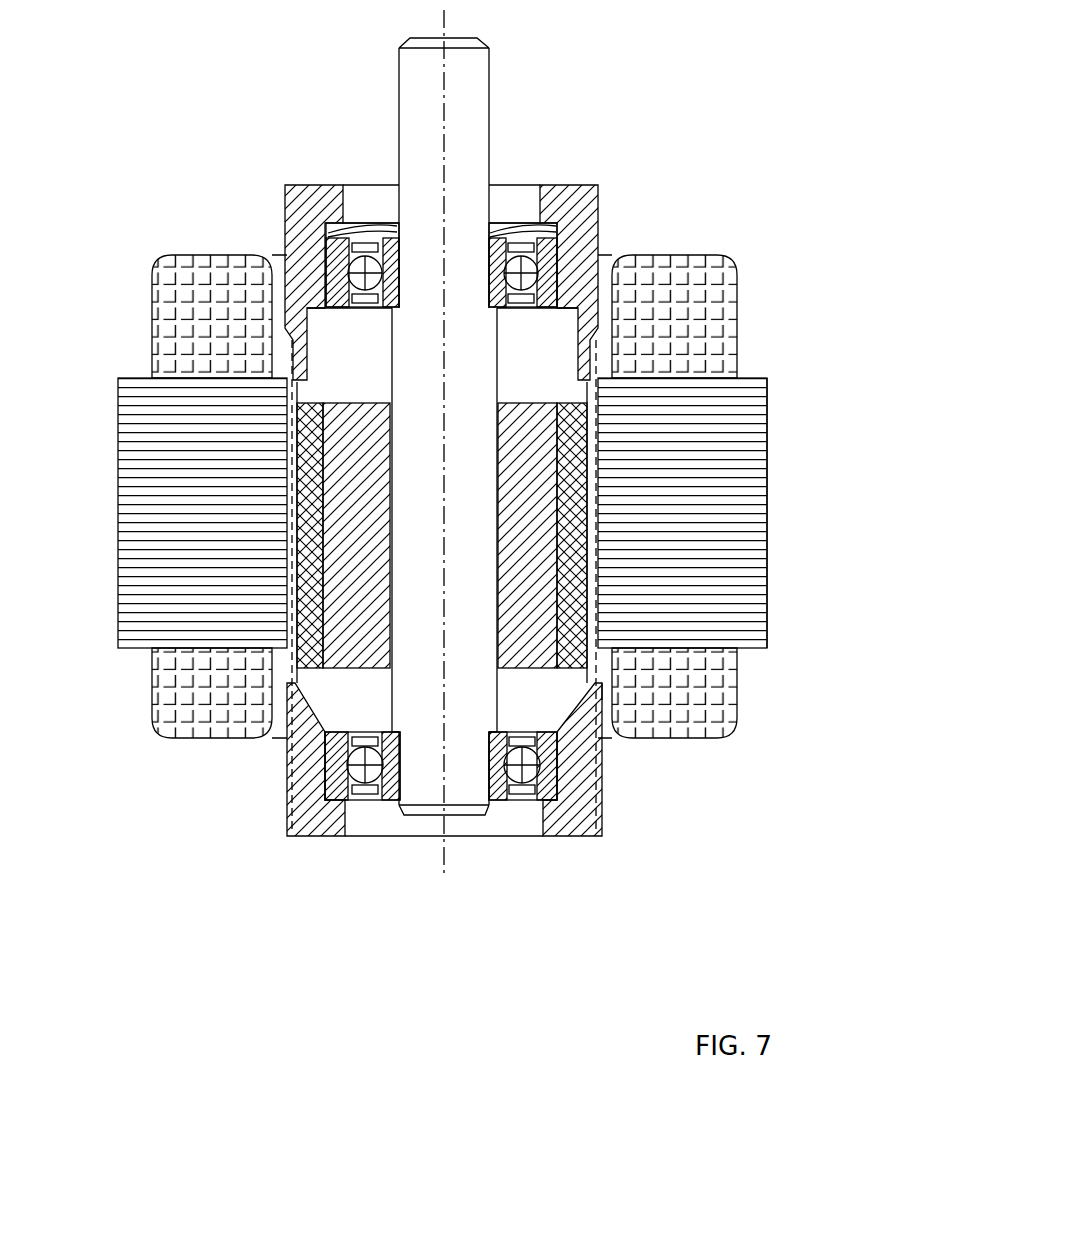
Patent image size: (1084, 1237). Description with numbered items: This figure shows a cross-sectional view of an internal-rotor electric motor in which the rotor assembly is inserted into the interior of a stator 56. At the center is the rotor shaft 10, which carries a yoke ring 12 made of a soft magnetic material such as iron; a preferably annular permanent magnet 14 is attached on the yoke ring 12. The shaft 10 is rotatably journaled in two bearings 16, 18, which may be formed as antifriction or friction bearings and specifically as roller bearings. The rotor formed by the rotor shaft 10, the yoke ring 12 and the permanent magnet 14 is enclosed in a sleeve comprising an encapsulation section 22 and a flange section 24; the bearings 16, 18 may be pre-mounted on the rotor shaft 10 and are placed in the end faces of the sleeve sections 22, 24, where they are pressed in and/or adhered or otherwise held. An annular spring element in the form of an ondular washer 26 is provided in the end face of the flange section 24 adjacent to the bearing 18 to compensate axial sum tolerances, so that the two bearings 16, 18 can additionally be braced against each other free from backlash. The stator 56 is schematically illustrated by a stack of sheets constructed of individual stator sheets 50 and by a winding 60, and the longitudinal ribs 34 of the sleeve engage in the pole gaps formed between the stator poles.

The rotor shaft 10 is at (458, 95).
The yoke ring 12 is at (528, 615).
The permanent magnet 14 is at (570, 583).
The bearing 16 is at (522, 272).
The bearing 18 is at (528, 770).
The encapsulation section 22 is at (570, 815).
The flange section 24 is at (593, 183).
The ondular washer 26 is at (597, 222).
The longitudinal ribs 34 is at (603, 753).
The stator sheets 50 is at (700, 487).
The stator 56 is at (767, 435).
The winding 60 is at (672, 325).